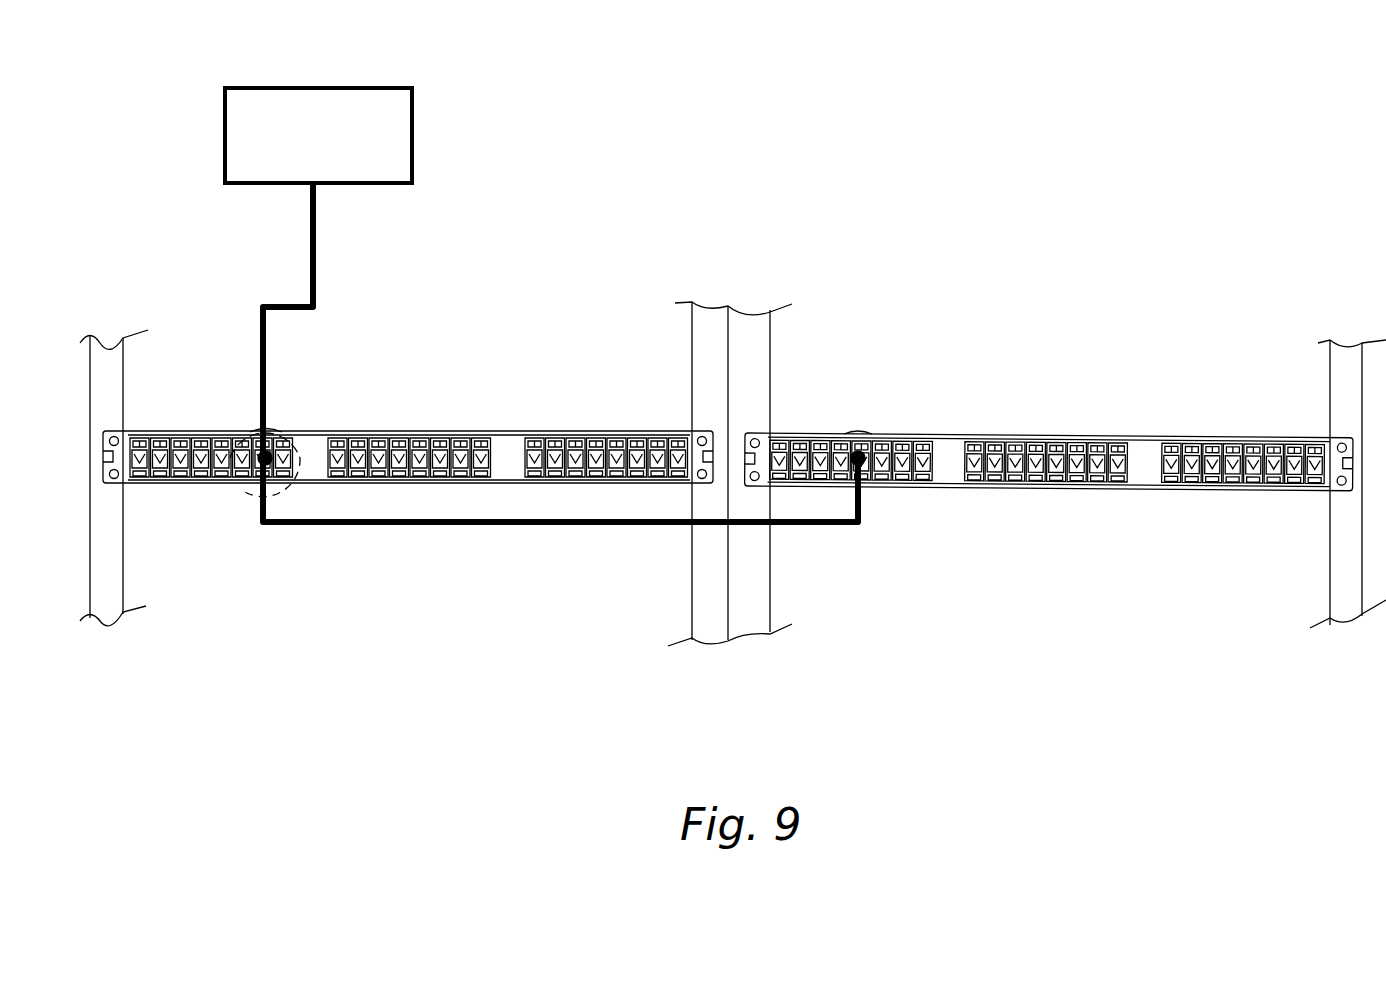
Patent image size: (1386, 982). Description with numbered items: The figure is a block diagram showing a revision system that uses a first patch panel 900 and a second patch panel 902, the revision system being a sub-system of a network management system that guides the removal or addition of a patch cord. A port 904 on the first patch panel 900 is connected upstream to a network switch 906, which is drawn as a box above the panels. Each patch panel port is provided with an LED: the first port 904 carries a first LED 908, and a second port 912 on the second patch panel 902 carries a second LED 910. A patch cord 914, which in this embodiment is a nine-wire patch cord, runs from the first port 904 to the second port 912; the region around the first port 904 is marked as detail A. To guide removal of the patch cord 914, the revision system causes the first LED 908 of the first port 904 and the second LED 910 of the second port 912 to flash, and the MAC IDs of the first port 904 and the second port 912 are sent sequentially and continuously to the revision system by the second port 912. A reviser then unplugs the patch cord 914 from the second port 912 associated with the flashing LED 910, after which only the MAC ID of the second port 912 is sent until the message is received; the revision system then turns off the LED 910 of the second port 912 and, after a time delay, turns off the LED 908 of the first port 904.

The first patch panel 900 is at (592, 418).
The second patch panel 902 is at (1197, 410).
The port 904 is at (246, 416).
The network switch 906 is at (422, 122).
The first LED 908 is at (285, 430).
The second LED 910 is at (872, 440).
The second port 912 is at (857, 402).
The patch cord 914 is at (598, 525).
The detail region A is at (251, 497).